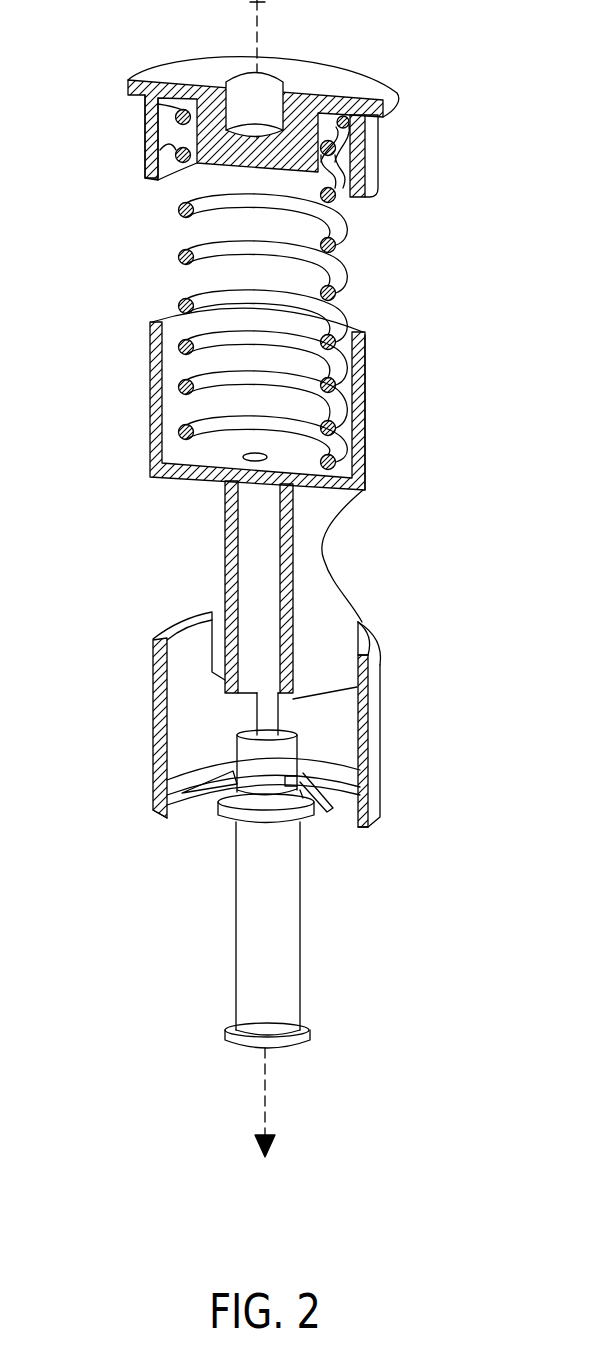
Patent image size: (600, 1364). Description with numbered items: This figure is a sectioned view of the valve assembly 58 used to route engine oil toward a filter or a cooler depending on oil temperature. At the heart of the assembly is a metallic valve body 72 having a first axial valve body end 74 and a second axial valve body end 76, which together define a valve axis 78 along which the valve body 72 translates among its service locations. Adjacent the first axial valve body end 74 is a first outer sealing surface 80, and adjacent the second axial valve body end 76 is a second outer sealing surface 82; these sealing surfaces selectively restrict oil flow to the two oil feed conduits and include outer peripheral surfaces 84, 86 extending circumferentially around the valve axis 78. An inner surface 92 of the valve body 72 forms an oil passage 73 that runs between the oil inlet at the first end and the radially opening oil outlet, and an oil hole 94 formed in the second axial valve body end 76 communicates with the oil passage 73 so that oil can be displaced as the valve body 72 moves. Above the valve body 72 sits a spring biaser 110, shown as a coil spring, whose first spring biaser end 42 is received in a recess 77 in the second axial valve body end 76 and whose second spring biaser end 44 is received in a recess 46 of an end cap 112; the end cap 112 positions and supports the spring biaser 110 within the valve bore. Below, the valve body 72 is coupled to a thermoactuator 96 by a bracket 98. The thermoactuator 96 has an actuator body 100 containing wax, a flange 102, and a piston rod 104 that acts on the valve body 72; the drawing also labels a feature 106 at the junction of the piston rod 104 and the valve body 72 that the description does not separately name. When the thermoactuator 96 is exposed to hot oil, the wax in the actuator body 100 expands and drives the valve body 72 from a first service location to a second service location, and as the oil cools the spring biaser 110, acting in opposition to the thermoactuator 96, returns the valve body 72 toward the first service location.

The first spring biaser end 42 is at (178, 431).
The second spring biaser end 44 is at (150, 117).
The recess 46 is at (327, 118).
The valve assembly 58 is at (98, 748).
The valve body 72 is at (212, 612).
The oil passage 73 is at (193, 673).
The first axial valve body end 74 is at (382, 808).
The second axial valve body end 76 is at (355, 332).
The recess 77 is at (168, 328).
The valve axis 78 is at (258, 33).
The first outer sealing surface 80 is at (383, 733).
The second outer sealing surface 82 is at (366, 386).
The housing outer wall 84 is at (378, 668).
The second outer peripheral surface 86 is at (366, 436).
The inner surface 92 is at (270, 636).
The oil hole 94 is at (215, 458).
The thermoactuator 96 is at (220, 853).
The bracket 98 is at (331, 810).
The actuator body 100 is at (300, 945).
The flange 102 is at (218, 798).
The piston rod 104 is at (282, 710).
The shaft lower end 106 is at (234, 697).
The spring biaser 110 is at (178, 256).
The end cap 112 is at (392, 100).